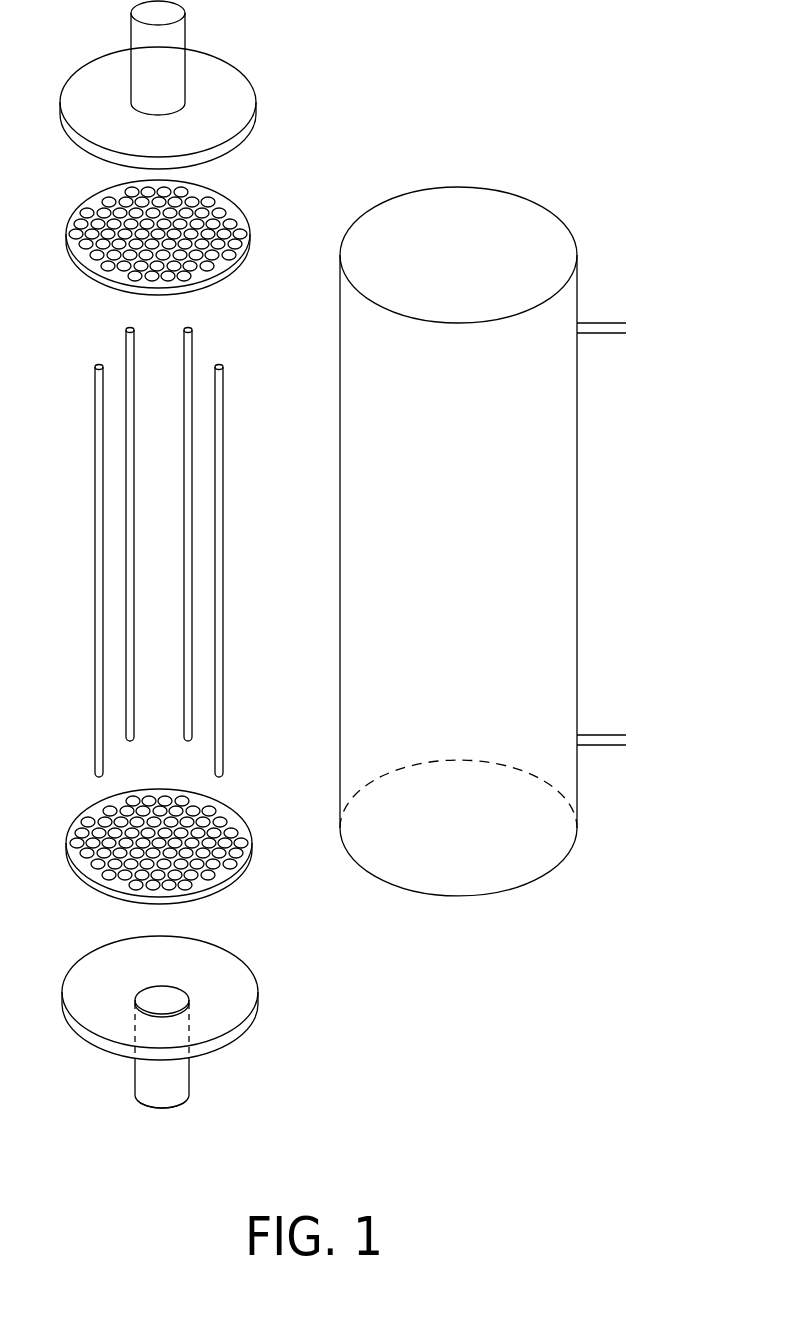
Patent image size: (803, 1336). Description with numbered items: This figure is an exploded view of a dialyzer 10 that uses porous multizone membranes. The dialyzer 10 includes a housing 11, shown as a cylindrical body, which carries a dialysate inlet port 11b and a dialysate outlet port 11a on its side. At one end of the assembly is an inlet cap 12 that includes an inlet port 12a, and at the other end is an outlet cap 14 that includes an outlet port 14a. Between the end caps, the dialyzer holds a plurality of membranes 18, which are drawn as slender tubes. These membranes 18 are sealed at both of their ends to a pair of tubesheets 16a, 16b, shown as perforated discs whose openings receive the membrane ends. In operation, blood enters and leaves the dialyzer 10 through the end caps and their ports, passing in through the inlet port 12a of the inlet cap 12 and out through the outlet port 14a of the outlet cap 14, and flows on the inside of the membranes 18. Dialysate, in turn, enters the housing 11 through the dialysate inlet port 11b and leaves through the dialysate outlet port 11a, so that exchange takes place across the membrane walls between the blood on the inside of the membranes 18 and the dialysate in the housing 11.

The dialyzer 10 is at (468, 1002).
The housing 11 is at (563, 860).
The dialysate outlet port 11a is at (607, 333).
The dialysate inlet port 11b is at (620, 745).
The inlet cap 12 is at (255, 86).
The inlet port 12a is at (185, 3).
The outlet cap 14 is at (258, 987).
The outlet port 14a is at (188, 1080).
The tubesheet 16a is at (250, 222).
The tubesheet 16b is at (252, 857).
The membranes 18 is at (245, 630).